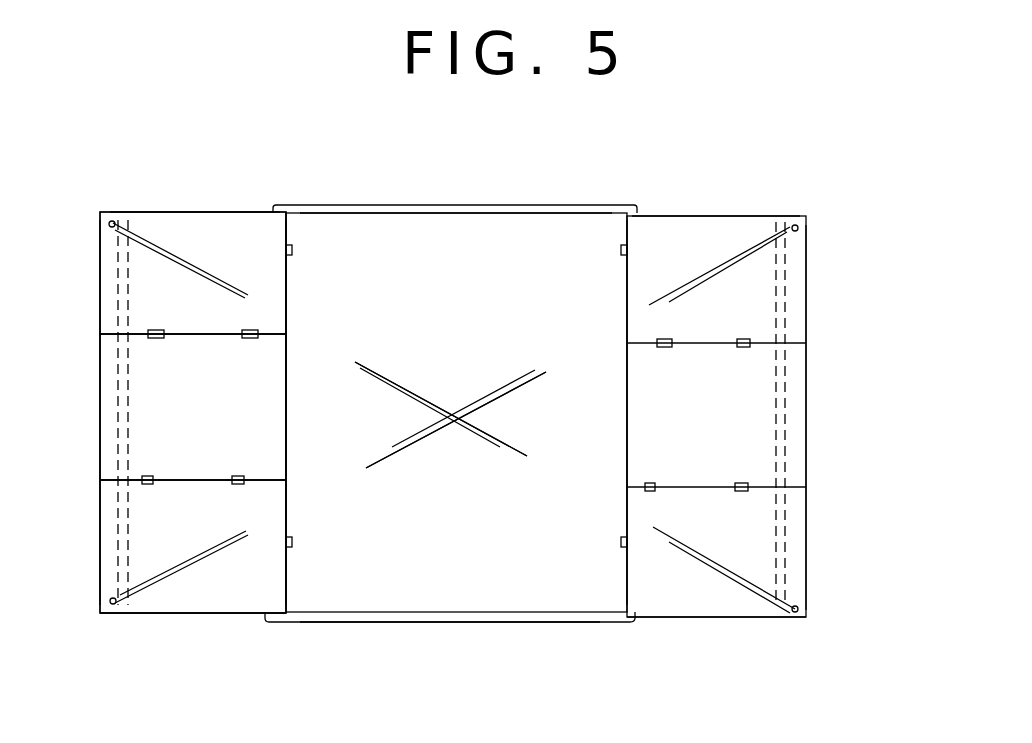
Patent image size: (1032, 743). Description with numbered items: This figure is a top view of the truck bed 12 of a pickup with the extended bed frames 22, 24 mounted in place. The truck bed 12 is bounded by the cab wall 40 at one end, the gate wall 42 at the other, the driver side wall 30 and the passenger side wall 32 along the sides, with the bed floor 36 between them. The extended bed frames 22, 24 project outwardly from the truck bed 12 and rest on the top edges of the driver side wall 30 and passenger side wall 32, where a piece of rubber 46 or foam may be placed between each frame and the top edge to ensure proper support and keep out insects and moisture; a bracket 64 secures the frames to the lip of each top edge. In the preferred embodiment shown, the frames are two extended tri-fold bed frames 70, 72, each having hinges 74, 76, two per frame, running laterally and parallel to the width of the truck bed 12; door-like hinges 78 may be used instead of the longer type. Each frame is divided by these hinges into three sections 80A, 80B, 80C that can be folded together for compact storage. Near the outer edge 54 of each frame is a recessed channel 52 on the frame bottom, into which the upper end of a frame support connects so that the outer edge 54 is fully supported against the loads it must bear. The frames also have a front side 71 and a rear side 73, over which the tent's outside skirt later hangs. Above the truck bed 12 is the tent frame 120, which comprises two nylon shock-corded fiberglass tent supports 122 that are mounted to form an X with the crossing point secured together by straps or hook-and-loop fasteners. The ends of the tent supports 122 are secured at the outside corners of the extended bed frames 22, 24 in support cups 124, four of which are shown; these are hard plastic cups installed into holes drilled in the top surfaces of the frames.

The truck bed 12 is at (470, 503).
The extended bed frame 22 is at (197, 212).
The extended bed frame 24 is at (688, 216).
The driver side wall 30 is at (288, 308).
The passenger side wall 32 is at (624, 305).
The bed floor 36 is at (578, 450).
The cab wall 40 is at (490, 206).
The gate wall 42 is at (410, 623).
The piece of rubber 46 is at (532, 624).
The recessed channel 52 is at (130, 404).
The outer edge 54 is at (88, 208).
The bracket 64 is at (294, 250).
The extended tri-fold bed frame 70 is at (205, 615).
The front side 71 is at (240, 212).
The extended tri-fold bed frame 72 is at (695, 620).
The rear side 73 is at (240, 618).
The hinge 74 is at (210, 342).
The hinge 76 is at (200, 483).
The door-like hinge 78 is at (152, 330).
The section 80A is at (148, 618).
The section 80B is at (100, 437).
The section 80C is at (98, 292).
The tent frame 120 is at (463, 382).
The tent support 122 is at (380, 368).
The support cup 124 is at (114, 222).